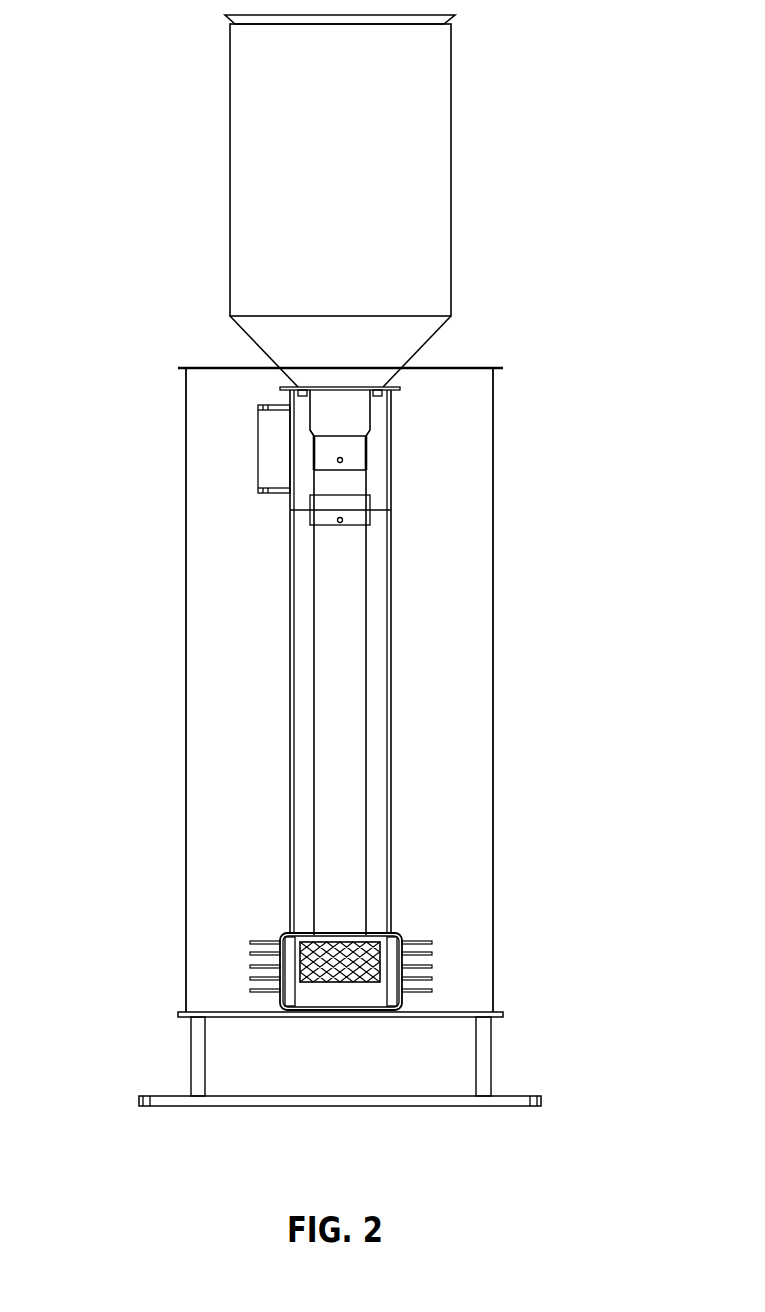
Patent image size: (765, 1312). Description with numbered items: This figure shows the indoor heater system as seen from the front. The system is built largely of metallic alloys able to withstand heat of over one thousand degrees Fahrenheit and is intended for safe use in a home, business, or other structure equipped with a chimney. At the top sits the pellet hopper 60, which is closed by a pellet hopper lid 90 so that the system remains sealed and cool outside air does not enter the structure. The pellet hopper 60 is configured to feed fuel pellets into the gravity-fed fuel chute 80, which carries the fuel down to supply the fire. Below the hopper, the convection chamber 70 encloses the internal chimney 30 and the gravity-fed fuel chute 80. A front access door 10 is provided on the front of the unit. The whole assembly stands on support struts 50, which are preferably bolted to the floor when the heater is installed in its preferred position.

The front access door 10 is at (328, 970).
The internal chimney 30 is at (302, 725).
The support struts 50 is at (476, 1077).
The pellet hopper 60 is at (375, 208).
The convection chamber 70 is at (462, 626).
The gravity-fed fuel chute 80 is at (345, 647).
The pellet hopper lid 90 is at (285, 17).